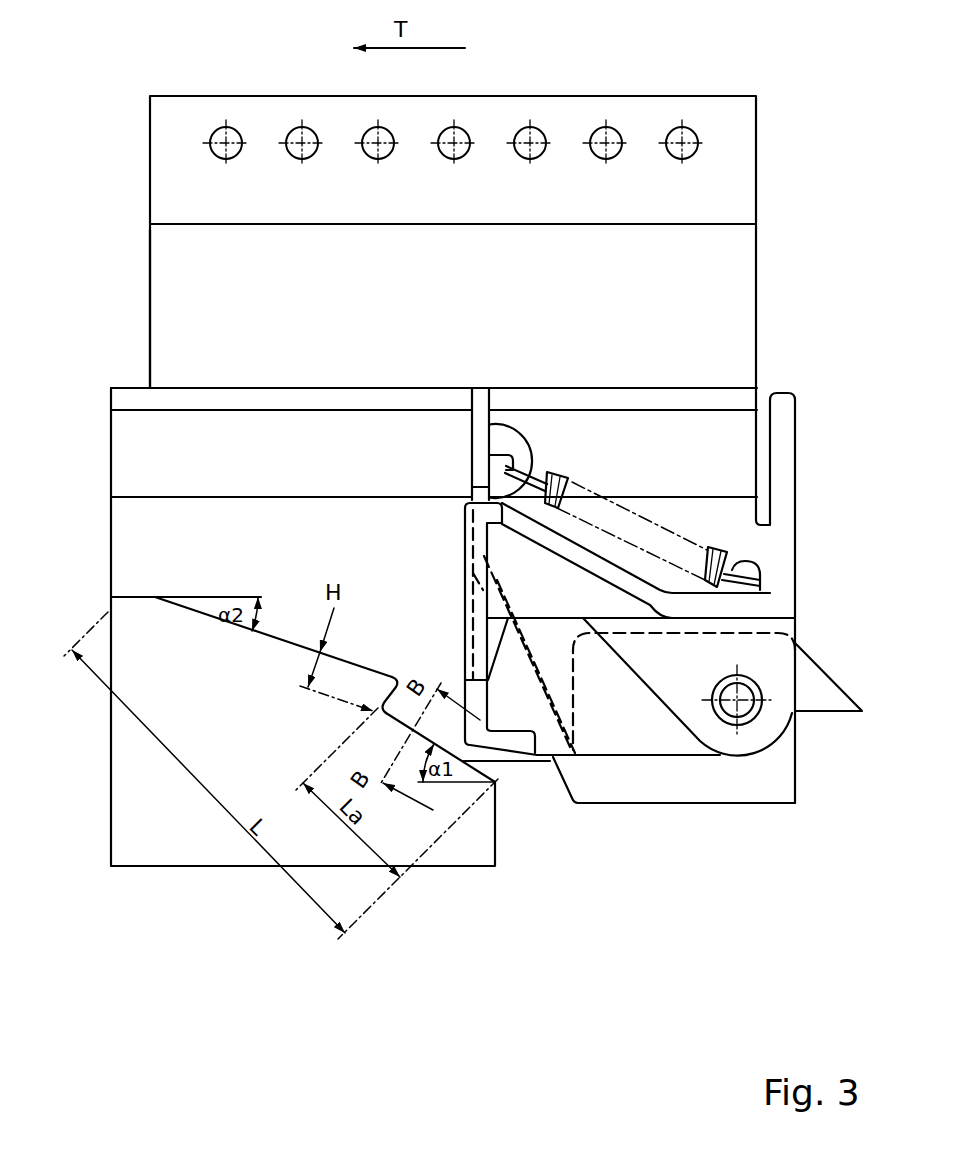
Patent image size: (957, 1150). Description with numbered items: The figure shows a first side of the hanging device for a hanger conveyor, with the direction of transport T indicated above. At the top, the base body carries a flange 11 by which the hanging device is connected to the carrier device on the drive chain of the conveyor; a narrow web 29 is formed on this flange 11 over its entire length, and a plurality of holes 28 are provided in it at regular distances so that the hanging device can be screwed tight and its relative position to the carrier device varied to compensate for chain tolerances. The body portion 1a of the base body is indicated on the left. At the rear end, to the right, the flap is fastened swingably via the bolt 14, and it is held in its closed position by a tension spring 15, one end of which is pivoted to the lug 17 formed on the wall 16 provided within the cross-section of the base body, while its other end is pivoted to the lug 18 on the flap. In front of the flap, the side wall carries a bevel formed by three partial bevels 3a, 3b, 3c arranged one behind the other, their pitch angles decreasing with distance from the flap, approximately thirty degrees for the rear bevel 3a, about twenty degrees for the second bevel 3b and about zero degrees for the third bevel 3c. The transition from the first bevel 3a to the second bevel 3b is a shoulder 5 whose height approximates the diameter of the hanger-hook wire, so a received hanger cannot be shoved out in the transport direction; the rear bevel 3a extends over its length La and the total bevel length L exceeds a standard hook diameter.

The holes 28 is at (218, 128).
The web 29 is at (172, 166).
The flange 11 is at (146, 287).
The blade body 1a is at (107, 519).
The third partial bevel 3c is at (130, 604).
The second partial bevel 3b is at (262, 638).
The first partial bevel 3a is at (398, 732).
The shoulder 5 is at (390, 676).
The wall 16 is at (478, 566).
The lug 17 is at (530, 458).
The tension spring 15 is at (720, 553).
The lug 18 is at (761, 574).
The bolt 14 is at (753, 710).